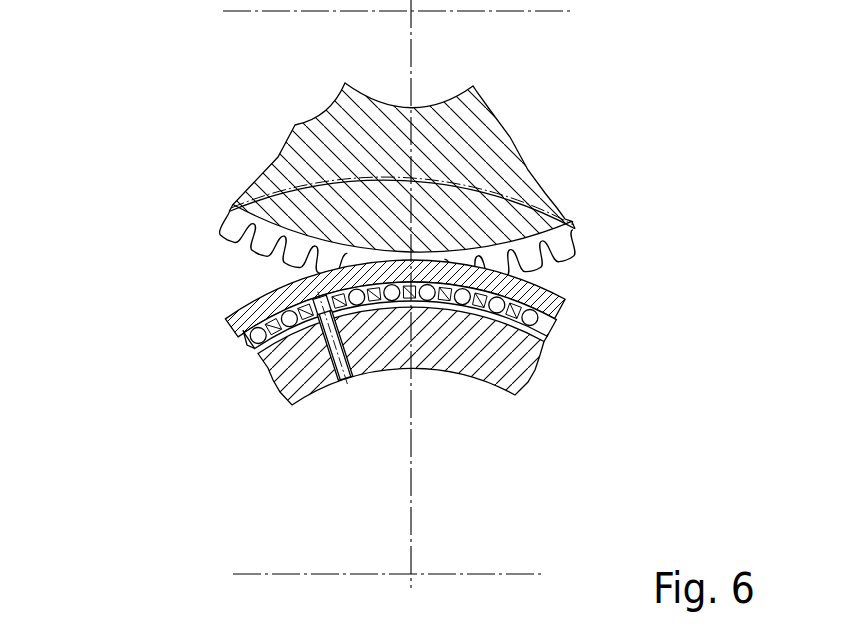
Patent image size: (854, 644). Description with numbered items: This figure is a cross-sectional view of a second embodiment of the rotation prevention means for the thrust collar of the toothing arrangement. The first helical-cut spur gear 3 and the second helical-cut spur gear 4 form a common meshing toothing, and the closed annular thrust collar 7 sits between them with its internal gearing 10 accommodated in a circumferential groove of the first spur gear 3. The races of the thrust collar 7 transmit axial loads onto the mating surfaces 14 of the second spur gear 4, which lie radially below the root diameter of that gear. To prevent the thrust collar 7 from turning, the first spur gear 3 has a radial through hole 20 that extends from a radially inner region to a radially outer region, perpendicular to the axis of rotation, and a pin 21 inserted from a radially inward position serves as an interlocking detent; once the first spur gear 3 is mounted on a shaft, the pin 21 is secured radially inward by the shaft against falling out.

The second helical-cut spur gear 4 is at (335, 178).
The mating surfaces 14 is at (248, 208).
The thrust collar 7 is at (312, 298).
The internal gearing 10 is at (228, 318).
The first helical-cut spur gear 3 is at (287, 368).
The pin 21 is at (337, 380).
The radial through hole 20 is at (343, 382).